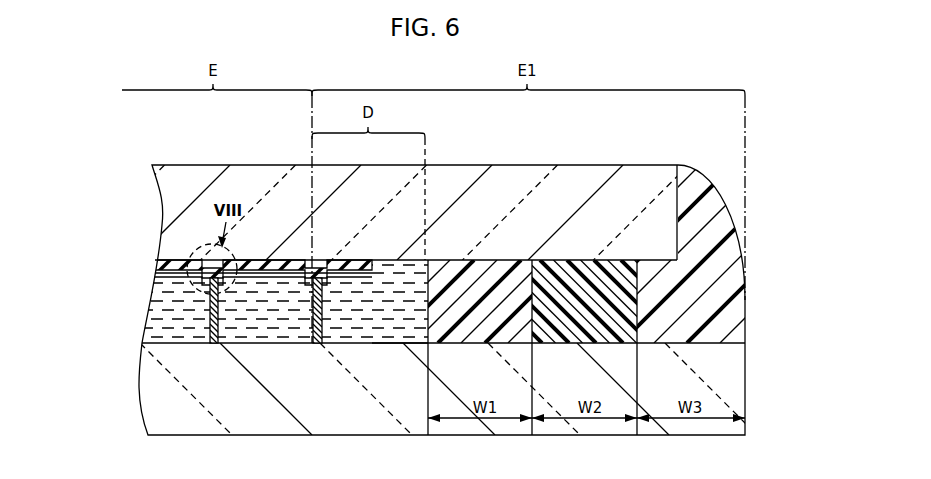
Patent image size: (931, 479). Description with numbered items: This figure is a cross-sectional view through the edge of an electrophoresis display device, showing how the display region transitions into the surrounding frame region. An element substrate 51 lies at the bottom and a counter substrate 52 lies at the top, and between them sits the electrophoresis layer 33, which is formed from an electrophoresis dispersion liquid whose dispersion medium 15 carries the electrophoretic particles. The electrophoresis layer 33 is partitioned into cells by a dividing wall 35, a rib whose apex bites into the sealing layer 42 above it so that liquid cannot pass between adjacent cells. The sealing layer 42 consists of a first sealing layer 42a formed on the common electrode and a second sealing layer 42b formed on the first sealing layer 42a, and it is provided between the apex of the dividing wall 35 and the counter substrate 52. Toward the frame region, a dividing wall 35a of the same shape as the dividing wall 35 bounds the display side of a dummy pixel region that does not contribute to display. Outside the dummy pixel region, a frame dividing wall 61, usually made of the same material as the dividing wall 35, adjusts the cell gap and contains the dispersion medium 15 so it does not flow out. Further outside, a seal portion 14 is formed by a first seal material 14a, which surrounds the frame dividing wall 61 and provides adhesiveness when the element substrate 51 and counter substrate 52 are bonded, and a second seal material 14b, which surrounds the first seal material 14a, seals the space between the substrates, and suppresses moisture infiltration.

The seal portion 14 is at (673, 221).
The first seal material 14a is at (600, 262).
The second seal material 14b is at (652, 267).
The dispersion medium 15 is at (397, 344).
The electrophoresis layer 33 is at (139, 277).
The dividing wall 35 is at (214, 344).
The dividing wall 35a is at (319, 345).
The sealing layer 42 is at (225, 258).
The first sealing layer 42a is at (180, 261).
The second sealing layer 42b is at (157, 275).
The element substrate 51 is at (738, 376).
The counter substrate 52 is at (528, 184).
The frame dividing wall 61 is at (473, 342).